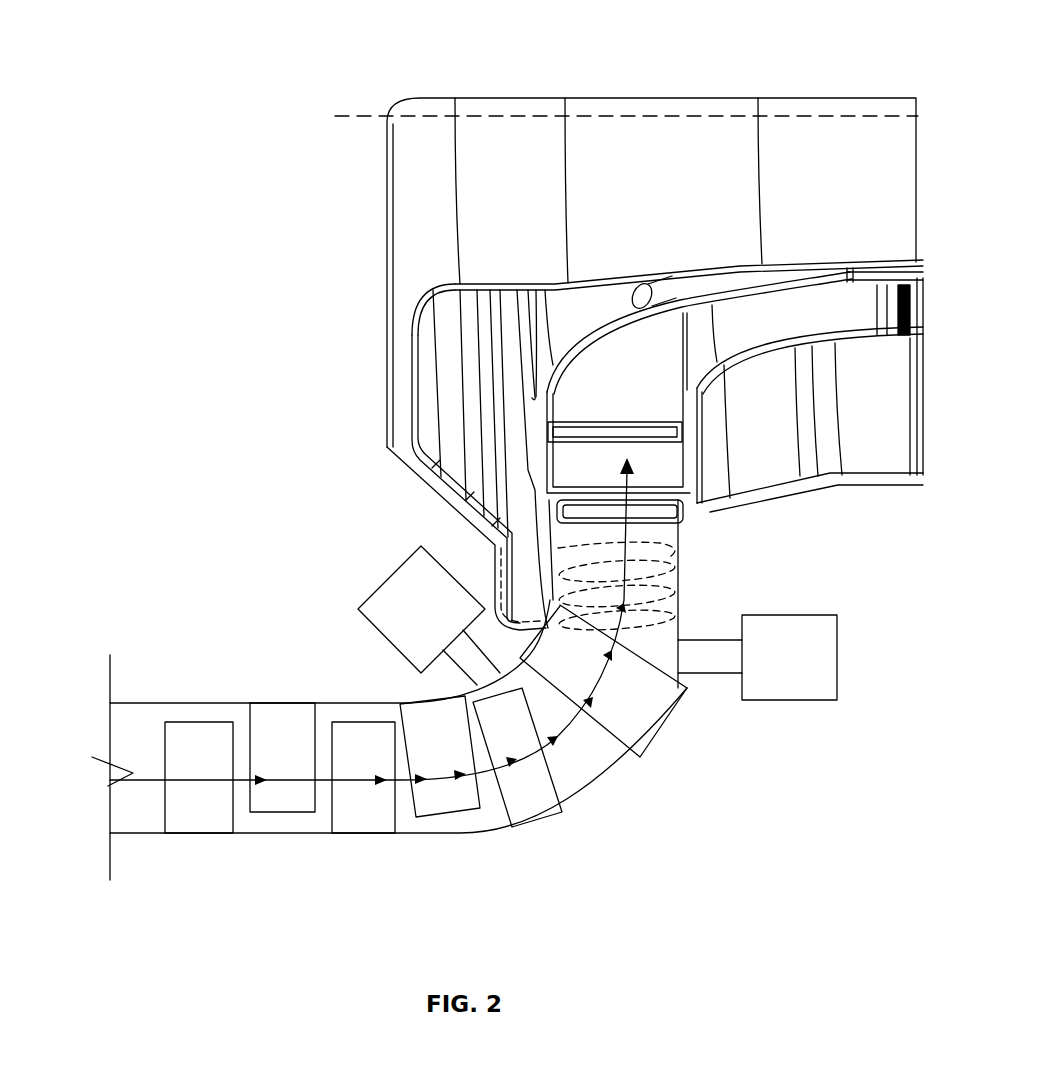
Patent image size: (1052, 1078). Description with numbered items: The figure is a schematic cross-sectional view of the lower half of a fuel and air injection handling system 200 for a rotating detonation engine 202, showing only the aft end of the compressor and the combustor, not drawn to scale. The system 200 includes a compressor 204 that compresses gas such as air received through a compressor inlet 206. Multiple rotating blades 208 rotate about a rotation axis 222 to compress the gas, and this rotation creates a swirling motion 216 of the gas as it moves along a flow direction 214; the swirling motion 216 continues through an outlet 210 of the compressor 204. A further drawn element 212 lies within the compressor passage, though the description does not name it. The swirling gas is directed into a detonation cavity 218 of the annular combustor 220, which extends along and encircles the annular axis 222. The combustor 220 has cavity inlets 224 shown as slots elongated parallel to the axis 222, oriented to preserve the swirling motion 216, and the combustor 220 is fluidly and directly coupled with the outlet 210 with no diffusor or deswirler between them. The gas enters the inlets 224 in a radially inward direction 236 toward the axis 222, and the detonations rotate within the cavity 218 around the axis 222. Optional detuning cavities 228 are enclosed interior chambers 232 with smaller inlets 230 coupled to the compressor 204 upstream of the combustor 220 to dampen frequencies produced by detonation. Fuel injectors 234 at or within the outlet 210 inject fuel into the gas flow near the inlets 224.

The fuel and air injection handling system 200 is at (938, 611).
The rotating detonation engine 202 is at (920, 73).
The compressor 204 is at (120, 846).
The compressor inlet 206 is at (128, 800).
The rotating blades 208 is at (165, 745).
The compressor outlet 210 is at (683, 635).
The flow element 212 is at (320, 782).
The flow direction 214 is at (577, 718).
The swirling motion 216 is at (642, 612).
The detonation cavity 218 is at (639, 399).
The annular combustor 220 is at (307, 93).
The annular axis 222 is at (360, 118).
The cavity inlets 224 is at (658, 512).
The detuning cavities 228 is at (597, 623).
The inlets 230 is at (465, 656).
The enclosed interior chambers 232 is at (400, 623).
The fuel injectors 234 is at (490, 568).
The radially inward direction 236 is at (627, 483).